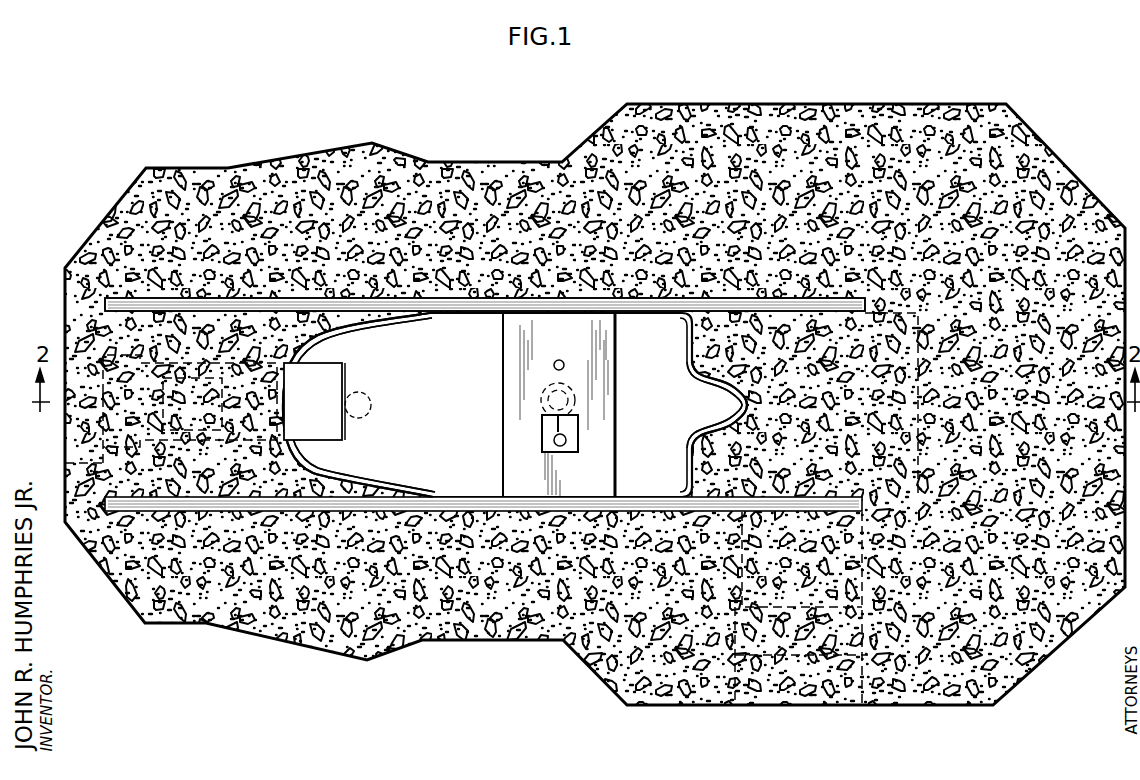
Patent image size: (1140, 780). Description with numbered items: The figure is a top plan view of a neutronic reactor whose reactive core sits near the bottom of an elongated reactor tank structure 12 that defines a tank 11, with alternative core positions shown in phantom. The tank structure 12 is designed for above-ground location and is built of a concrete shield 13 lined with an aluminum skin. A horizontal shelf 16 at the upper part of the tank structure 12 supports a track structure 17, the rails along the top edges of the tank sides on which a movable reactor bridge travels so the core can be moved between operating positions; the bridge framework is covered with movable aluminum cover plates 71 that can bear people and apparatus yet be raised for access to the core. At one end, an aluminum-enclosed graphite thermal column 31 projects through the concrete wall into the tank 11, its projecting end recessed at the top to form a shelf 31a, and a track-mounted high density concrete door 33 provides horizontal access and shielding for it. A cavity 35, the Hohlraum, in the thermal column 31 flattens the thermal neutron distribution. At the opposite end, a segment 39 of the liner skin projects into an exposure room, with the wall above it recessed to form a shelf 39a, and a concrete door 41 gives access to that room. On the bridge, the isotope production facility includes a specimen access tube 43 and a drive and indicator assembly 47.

The tank 11 is at (395, 397).
The reactor tank structure 12 is at (501, 154).
The concrete shield 13 is at (700, 217).
The horizontal shelf 16 is at (417, 265).
The track structure 17 is at (471, 305).
The thermal column 31 is at (290, 336).
The shelf 31a is at (347, 376).
The high density concrete door 33 is at (58, 338).
The cavity 35 is at (180, 417).
The segment 39 is at (733, 402).
The shelf 39a is at (735, 406).
The concrete door 41 is at (874, 690).
The specimen access tube 43 is at (561, 360).
The drive and indicator assembly 47 is at (535, 441).
The cover plates 71 is at (612, 362).